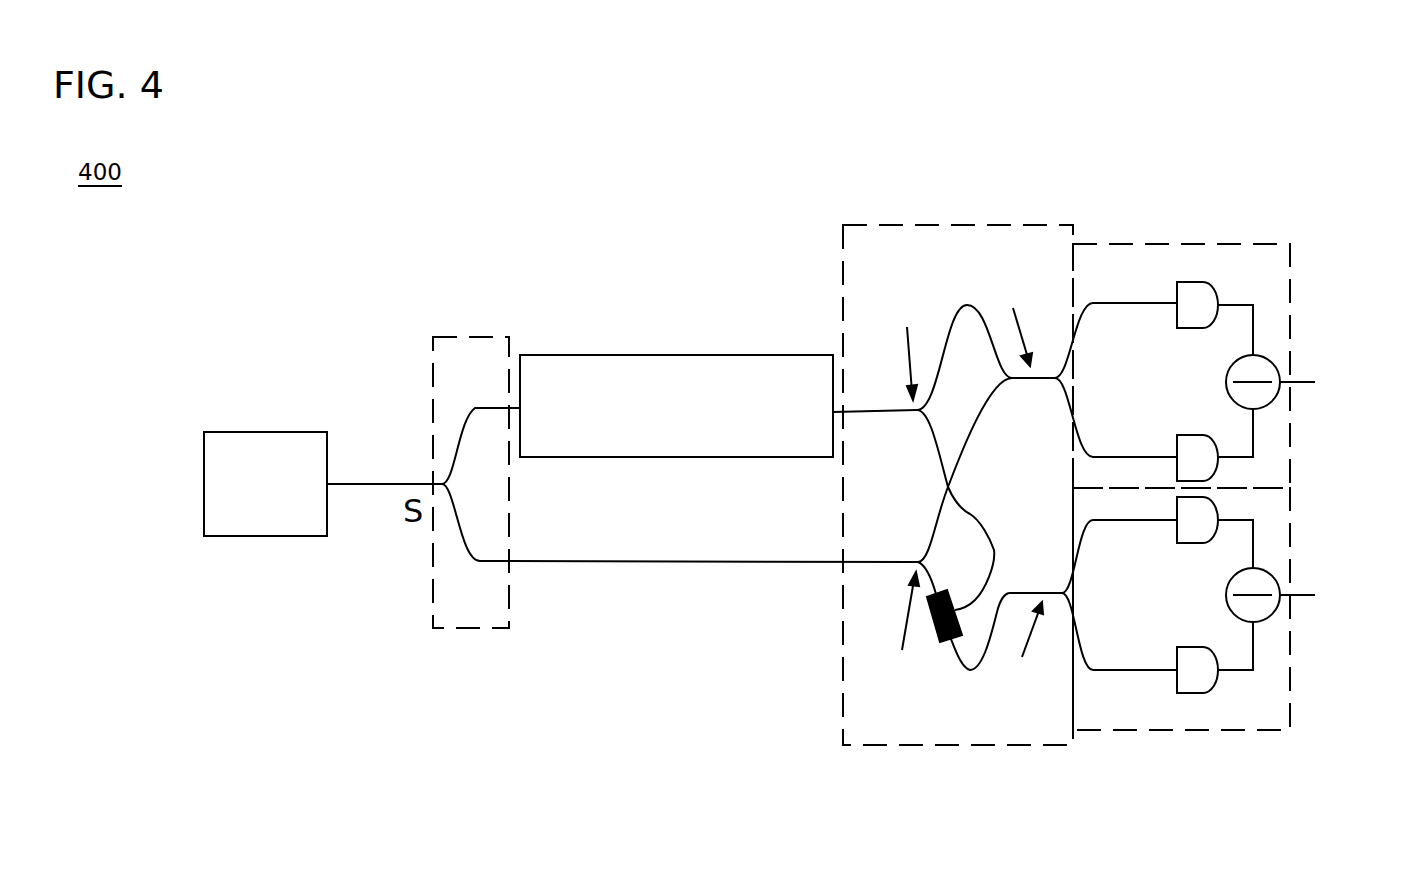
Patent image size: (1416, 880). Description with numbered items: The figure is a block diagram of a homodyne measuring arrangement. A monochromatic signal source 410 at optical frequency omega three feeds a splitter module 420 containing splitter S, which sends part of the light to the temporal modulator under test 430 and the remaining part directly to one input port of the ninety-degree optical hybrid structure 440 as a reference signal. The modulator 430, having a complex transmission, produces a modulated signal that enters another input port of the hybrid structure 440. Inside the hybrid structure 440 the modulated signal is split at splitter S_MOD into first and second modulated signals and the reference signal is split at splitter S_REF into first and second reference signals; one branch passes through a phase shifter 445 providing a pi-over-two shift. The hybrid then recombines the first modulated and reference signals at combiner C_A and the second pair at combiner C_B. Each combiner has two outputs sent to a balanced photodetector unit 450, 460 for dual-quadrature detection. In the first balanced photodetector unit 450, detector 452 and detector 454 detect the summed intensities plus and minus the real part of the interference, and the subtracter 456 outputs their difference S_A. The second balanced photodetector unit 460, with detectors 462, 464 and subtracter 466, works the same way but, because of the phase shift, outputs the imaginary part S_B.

The signal source 410 is at (268, 432).
The splitter module 420 is at (450, 628).
The temporal modulator under test 430 is at (592, 355).
The 90° optical hybrid structure 440 is at (1010, 539).
The phase shifter 445 is at (993, 548).
The balanced photodetector unit 450 is at (1241, 310).
The detector 452 is at (1212, 285).
The detector 454 is at (1218, 455).
The subtracter 456 is at (1275, 362).
The balanced photodetector unit 460 is at (1240, 665).
The detector 462 is at (1218, 503).
The detector 464 is at (1205, 690).
The subtracter 466 is at (1275, 577).